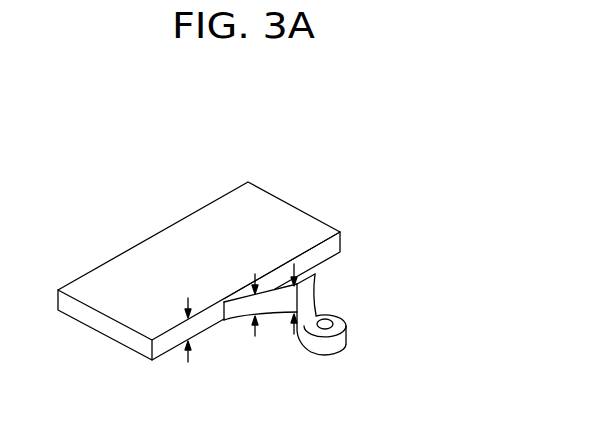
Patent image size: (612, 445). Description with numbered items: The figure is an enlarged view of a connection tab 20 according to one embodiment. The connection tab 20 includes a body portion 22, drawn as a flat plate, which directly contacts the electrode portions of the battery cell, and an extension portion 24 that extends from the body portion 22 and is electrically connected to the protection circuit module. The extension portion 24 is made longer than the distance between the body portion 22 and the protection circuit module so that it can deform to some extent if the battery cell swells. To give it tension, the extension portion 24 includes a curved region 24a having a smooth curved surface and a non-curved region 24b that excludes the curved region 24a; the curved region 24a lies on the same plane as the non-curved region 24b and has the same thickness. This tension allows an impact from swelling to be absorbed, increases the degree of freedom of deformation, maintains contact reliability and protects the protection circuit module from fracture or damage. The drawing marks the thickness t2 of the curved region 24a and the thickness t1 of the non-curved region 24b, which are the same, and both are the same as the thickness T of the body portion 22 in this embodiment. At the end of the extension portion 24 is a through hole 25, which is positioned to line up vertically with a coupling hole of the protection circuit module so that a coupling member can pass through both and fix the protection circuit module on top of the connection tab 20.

The connection tab 20 is at (200, 162).
The body portion 22 is at (268, 208).
The extension portion 24 is at (327, 278).
The curved region 24a is at (305, 305).
The non-curved region 24b is at (294, 283).
The through hole 25 is at (336, 320).
The thickness of body portion T is at (182, 336).
The thickness of non-curved region t1 is at (244, 318).
The thickness of curved region t2 is at (291, 322).